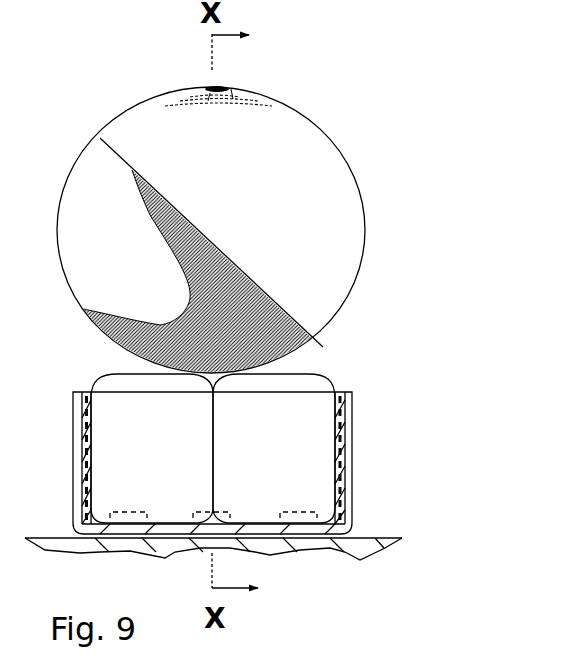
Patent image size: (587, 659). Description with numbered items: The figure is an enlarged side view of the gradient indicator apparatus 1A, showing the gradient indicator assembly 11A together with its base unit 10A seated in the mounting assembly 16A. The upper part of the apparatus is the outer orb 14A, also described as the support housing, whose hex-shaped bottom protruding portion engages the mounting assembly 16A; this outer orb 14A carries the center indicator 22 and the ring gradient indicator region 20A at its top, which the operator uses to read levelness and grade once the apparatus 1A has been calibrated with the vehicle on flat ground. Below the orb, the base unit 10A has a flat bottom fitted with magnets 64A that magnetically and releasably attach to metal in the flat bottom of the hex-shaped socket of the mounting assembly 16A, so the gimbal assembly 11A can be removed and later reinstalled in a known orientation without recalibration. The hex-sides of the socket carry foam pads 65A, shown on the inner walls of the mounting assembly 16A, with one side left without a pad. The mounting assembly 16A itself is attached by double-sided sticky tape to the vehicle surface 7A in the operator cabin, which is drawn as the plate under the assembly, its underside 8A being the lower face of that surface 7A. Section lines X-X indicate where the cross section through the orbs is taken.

The gradient indicator apparatus 1A is at (431, 250).
The surface 7A is at (378, 539).
The substrate bottom surface 8A is at (258, 554).
The base unit 10A is at (327, 374).
The gimbal assembly 11A is at (369, 212).
The outer orb 14A is at (347, 162).
The mounting assembly 16A is at (379, 440).
The flat top portion 20A is at (236, 92).
The light emitting element 22 is at (218, 86).
The magnets 64A is at (300, 508).
The foam pads 65A is at (343, 423).